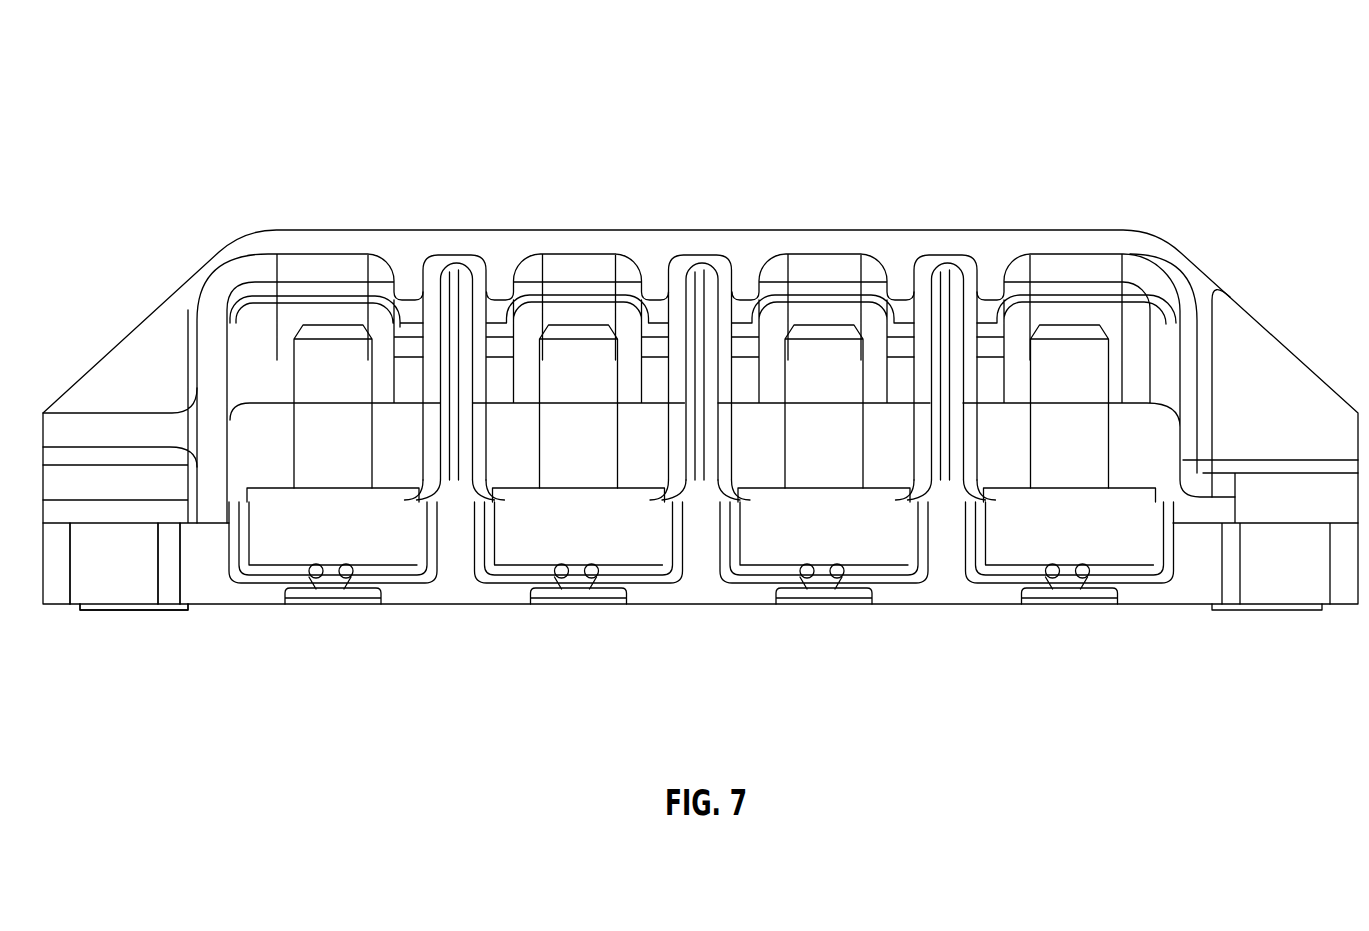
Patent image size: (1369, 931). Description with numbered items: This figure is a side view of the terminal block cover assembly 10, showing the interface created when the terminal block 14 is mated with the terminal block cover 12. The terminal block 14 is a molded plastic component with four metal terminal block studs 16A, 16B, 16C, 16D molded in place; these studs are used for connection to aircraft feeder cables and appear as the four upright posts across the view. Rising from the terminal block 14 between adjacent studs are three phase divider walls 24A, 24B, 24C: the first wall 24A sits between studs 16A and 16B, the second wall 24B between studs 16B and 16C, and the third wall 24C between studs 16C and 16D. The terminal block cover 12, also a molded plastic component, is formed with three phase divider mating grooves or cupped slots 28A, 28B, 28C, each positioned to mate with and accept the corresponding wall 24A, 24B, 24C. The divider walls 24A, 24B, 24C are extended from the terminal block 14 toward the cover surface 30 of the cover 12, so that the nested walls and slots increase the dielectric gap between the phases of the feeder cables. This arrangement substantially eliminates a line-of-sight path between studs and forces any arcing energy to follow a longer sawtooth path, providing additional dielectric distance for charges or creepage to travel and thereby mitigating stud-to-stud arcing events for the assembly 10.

The terminal block cover assembly 10 is at (178, 83).
The terminal block cover 12 is at (163, 308).
The terminal block 14 is at (102, 613).
The terminal block stud 16A is at (1070, 473).
The terminal block stud 16B is at (827, 473).
The terminal block stud 16C is at (578, 473).
The terminal block stud 16D is at (322, 473).
The phase divider wall 24A is at (952, 478).
The phase divider wall 24B is at (707, 478).
The phase divider wall 24C is at (462, 478).
The phase divider mating groove or cupped slot 28A is at (945, 266).
The phase divider mating groove or cupped slot 28B is at (700, 270).
The phase divider mating groove or cupped slot 28C is at (452, 270).
The cover surface 30 is at (837, 242).